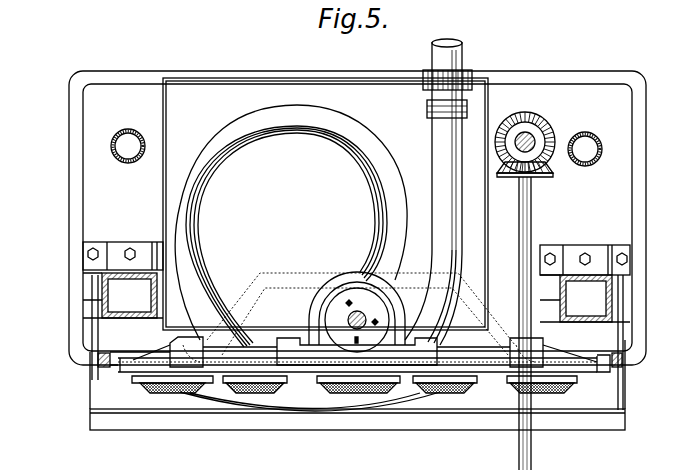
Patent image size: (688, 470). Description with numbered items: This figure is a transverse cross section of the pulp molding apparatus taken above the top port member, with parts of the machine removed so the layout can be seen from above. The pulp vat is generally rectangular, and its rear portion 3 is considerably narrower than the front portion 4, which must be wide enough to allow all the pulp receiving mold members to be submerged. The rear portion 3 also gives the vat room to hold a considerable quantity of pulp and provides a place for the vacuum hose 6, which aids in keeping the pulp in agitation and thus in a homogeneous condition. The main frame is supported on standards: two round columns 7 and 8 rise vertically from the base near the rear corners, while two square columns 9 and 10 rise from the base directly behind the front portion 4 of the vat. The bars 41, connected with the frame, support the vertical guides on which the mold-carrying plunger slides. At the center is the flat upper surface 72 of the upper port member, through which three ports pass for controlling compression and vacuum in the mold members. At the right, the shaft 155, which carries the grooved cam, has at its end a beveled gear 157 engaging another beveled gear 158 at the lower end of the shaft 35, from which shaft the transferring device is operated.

The rear portion of the vat 3 is at (190, 112).
The front portion of the vat 4 is at (131, 396).
The vacuum hose 6 is at (371, 142).
The round column 7 is at (112, 138).
The round column 8 is at (602, 140).
The square column 9 is at (102, 285).
The square column 10 is at (612, 292).
The shaft 35 is at (528, 136).
The bars 41 is at (94, 326).
The flat upper surface of the upper port member 72 is at (340, 312).
The shaft 155 is at (533, 232).
The beveled gear 157 is at (585, 184).
The beveled gear 158 is at (550, 124).